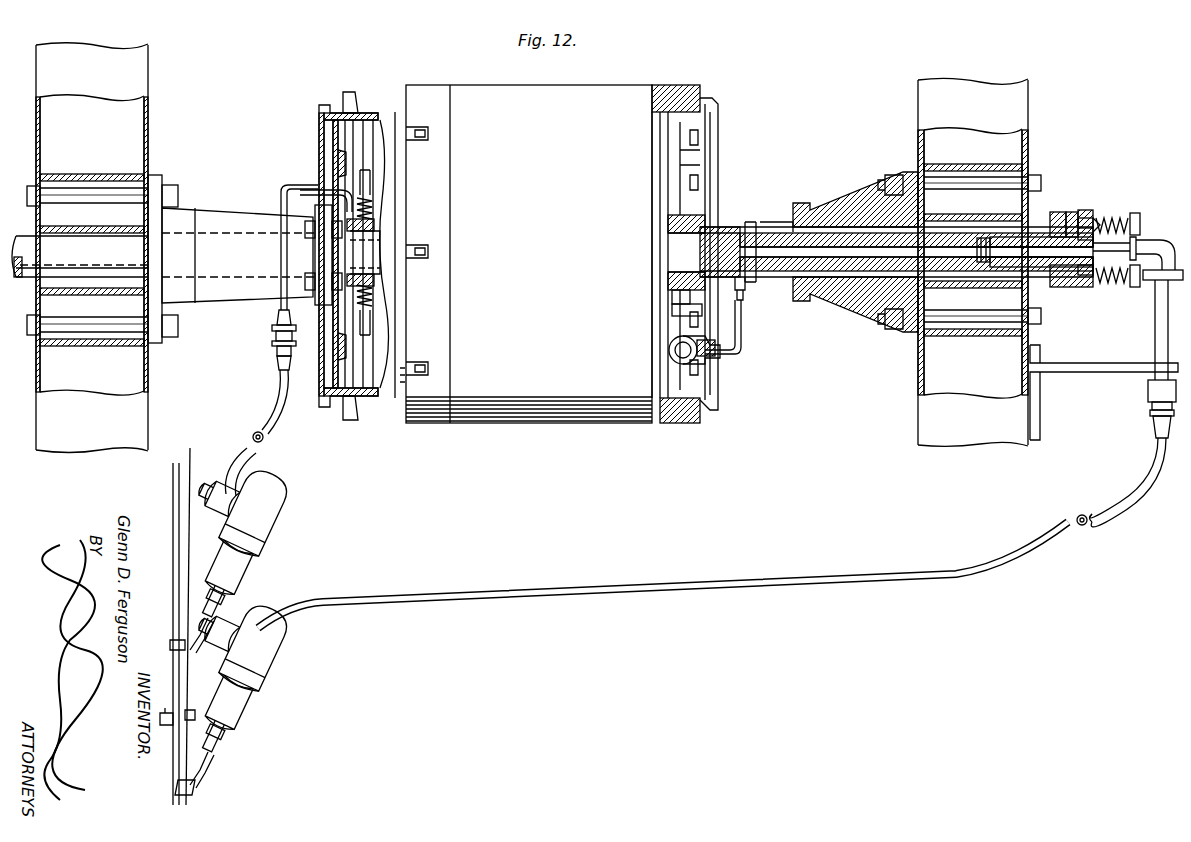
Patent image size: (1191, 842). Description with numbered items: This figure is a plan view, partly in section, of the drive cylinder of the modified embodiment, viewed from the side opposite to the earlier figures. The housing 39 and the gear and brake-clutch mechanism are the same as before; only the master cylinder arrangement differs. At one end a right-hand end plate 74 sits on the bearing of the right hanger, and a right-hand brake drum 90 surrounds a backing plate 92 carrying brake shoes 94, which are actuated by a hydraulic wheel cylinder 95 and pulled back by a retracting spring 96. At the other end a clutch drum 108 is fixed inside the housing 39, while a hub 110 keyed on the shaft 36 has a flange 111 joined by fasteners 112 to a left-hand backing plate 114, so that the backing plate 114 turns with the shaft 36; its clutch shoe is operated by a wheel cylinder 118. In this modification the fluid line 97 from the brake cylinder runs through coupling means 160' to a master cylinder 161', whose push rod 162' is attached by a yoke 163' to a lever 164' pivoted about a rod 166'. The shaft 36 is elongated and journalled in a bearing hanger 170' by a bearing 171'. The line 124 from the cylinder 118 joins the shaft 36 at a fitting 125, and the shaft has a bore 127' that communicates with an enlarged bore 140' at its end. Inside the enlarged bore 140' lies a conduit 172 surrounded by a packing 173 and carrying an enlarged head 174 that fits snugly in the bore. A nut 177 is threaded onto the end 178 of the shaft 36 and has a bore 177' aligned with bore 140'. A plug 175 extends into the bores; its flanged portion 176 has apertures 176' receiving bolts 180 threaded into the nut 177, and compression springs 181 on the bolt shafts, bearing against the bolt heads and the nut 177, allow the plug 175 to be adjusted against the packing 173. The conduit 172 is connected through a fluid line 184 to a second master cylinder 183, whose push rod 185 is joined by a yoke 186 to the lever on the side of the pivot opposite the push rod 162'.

The shaft 36 is at (733, 230).
The housing 39 is at (546, 430).
The right-hand end plate 74 is at (437, 431).
The right-hand brake drum 90 is at (386, 408).
The backing plate 92 is at (323, 402).
The brake shoes 94 is at (362, 112).
The hydraulic wheel cylinder 95 is at (325, 188).
The retracting spring 96 is at (376, 214).
The fluid line 97 is at (281, 190).
The clutch drum 108 is at (675, 100).
The hub 110 is at (668, 287).
The flange 111 is at (675, 318).
The fasteners 112 is at (672, 305).
The left-hand backing plate 114 is at (722, 124).
The wheel cylinder 118 is at (668, 352).
The fluid line 124 is at (742, 345).
The fitting 125 is at (760, 290).
The bore 127' is at (766, 228).
The enlarged bore 140' is at (1024, 228).
The coupling means 160' is at (264, 376).
The master cylinder 161' is at (228, 536).
The push rod 162' is at (235, 621).
The yoke 163' is at (160, 633).
The lever 164' is at (158, 626).
The rod 166' is at (157, 731).
The bearing hanger 170' is at (839, 202).
The bearing 171' is at (855, 304).
The conduit 172 is at (1136, 247).
The packing 173 is at (1005, 272).
The enlarged head 174 is at (985, 272).
The plug 175 is at (1110, 220).
The flanged portion 176 is at (1101, 190).
The apertures 176' is at (1096, 252).
The nut 177 is at (1048, 191).
The bore 177' is at (1075, 197).
The end of the shaft 178 is at (1053, 287).
The bolts 180 is at (1141, 225).
The compression springs 181 is at (1130, 222).
The master cylinder 183 is at (250, 690).
The fluid line 184 is at (358, 600).
The push rod 185 is at (215, 748).
The yoke 186 is at (200, 782).